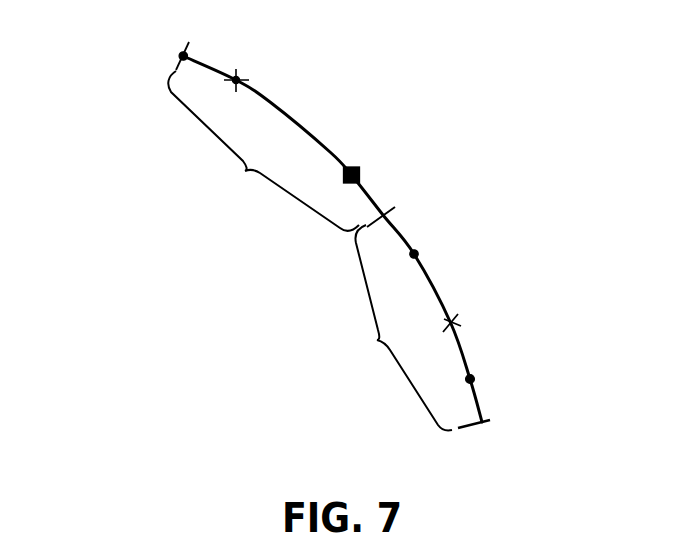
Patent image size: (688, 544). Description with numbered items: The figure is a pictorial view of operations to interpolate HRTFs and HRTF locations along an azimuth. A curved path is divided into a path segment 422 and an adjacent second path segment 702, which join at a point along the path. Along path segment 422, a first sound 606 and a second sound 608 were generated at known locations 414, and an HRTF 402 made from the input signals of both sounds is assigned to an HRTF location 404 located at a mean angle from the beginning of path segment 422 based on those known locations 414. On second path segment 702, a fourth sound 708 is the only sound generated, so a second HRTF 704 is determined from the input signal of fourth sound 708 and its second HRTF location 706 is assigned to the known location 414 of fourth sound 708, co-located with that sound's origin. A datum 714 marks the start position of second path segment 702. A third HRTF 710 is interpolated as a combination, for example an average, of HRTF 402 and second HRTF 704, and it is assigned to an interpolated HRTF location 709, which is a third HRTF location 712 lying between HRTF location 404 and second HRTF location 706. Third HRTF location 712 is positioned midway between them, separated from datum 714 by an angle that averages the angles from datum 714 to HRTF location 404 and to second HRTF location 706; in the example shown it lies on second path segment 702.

The known locations 414 is at (347, 223).
The second HRTF 704 is at (368, 55).
The second HRTF location 706 is at (368, 55).
The fourth sound 708 is at (242, 80).
The datum 714 is at (181, 56).
The interpolated HRTF location 709 is at (422, 124).
The third HRTF 710 is at (422, 124).
The third HRTF location 712 is at (361, 168).
The first sound 606 is at (418, 254).
The HRTF 402 is at (523, 311).
The HRTF location 404 is at (457, 320).
The second sound 608 is at (476, 378).
The second path segment 702 is at (243, 161).
The path segment 422 is at (396, 327).